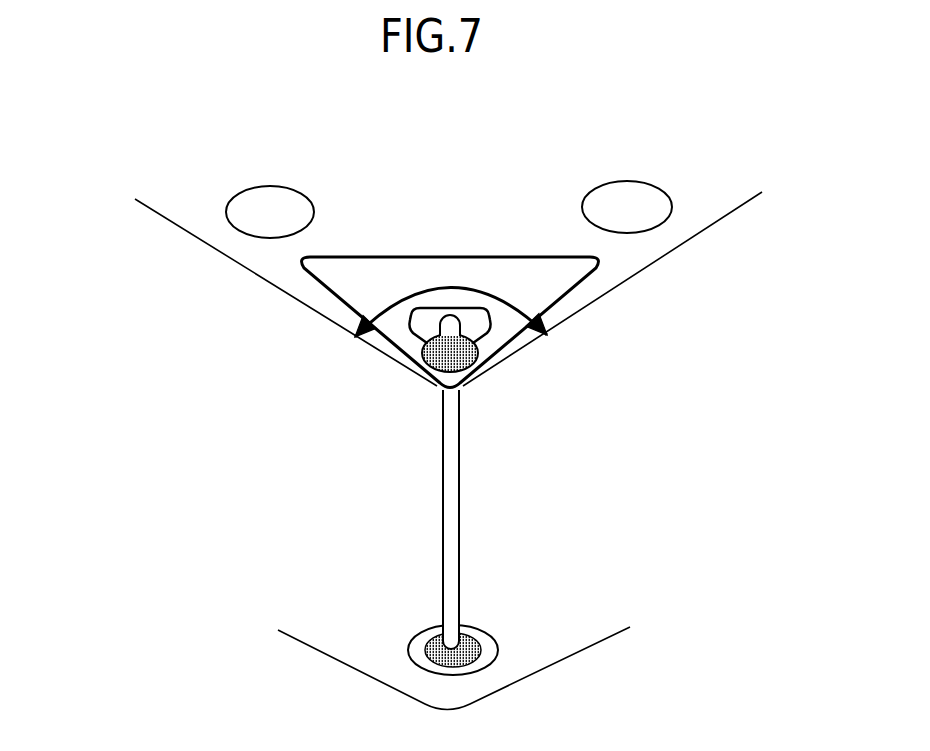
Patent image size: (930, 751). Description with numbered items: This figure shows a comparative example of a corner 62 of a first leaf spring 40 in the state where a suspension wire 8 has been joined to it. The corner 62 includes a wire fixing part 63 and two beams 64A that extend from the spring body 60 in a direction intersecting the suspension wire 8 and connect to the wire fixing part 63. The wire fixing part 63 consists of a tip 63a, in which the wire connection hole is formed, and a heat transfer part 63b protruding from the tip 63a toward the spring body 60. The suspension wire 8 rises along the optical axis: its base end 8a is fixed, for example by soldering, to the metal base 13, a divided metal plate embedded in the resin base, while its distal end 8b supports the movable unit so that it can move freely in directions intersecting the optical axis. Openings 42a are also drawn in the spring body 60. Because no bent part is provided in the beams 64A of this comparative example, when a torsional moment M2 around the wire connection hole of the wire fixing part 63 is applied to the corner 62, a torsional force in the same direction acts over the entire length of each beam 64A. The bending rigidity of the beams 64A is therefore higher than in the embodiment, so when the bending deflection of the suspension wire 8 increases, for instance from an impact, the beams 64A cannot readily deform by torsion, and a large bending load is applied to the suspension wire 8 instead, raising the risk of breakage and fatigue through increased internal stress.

The first leaf spring 40 is at (182, 228).
The corner 62 is at (197, 228).
The spring body 60 is at (735, 208).
The beams 64A is at (307, 298).
The suction openings 42a is at (270, 186).
The wire fixing part 63 is at (493, 362).
The tip 63a is at (468, 378).
The heat transfer part 63b is at (462, 306).
The suspension wire 8 is at (460, 515).
The base end 8a is at (473, 638).
The distal end 8b is at (450, 316).
The metal base 13 is at (543, 663).
The torsional moment M2 is at (407, 295).